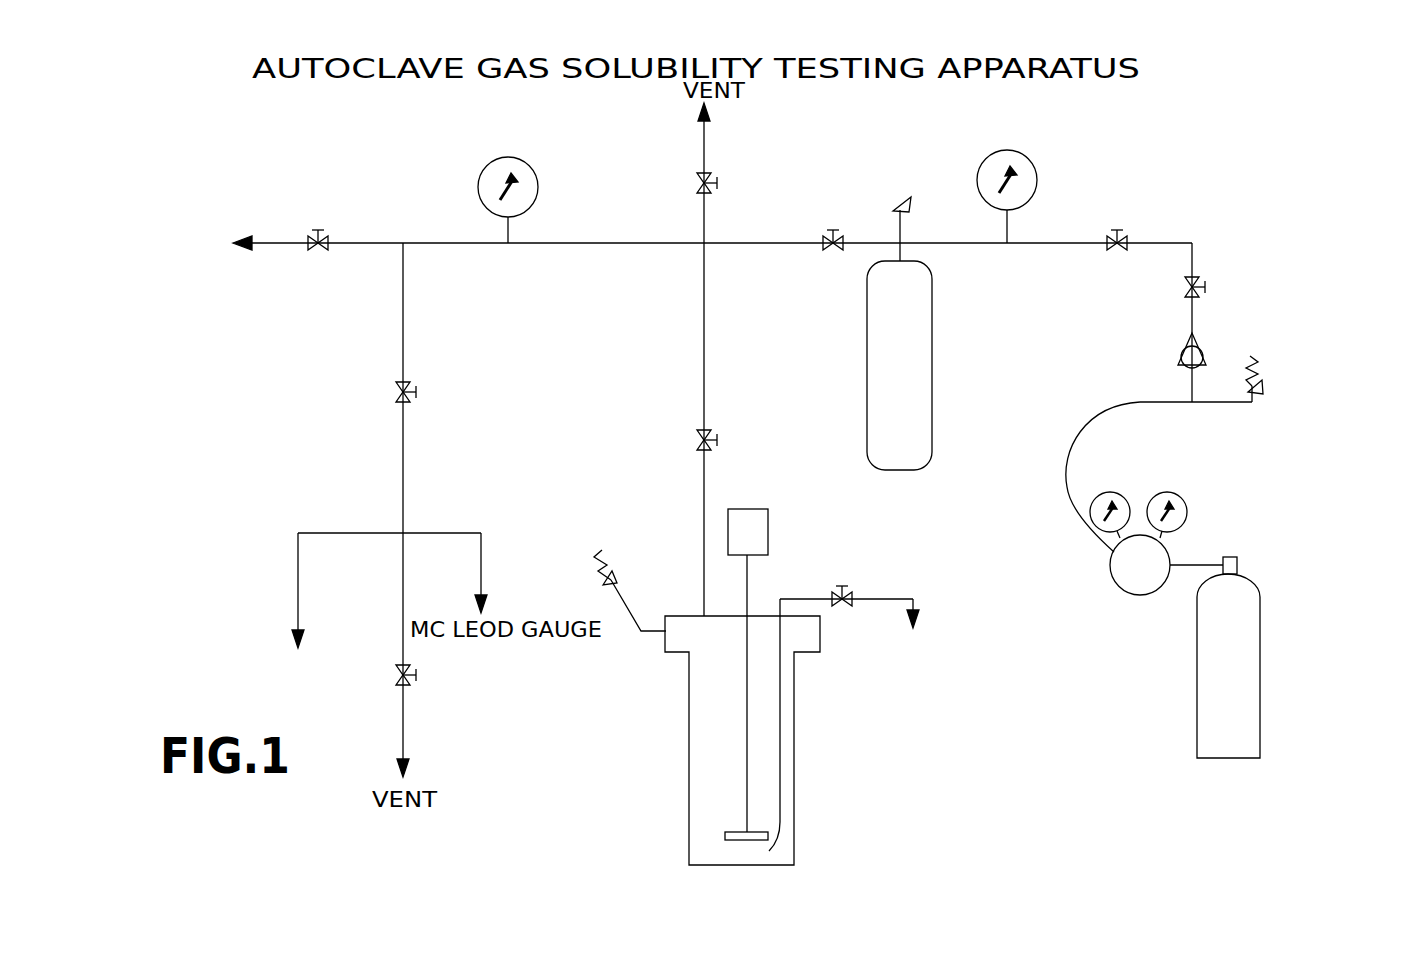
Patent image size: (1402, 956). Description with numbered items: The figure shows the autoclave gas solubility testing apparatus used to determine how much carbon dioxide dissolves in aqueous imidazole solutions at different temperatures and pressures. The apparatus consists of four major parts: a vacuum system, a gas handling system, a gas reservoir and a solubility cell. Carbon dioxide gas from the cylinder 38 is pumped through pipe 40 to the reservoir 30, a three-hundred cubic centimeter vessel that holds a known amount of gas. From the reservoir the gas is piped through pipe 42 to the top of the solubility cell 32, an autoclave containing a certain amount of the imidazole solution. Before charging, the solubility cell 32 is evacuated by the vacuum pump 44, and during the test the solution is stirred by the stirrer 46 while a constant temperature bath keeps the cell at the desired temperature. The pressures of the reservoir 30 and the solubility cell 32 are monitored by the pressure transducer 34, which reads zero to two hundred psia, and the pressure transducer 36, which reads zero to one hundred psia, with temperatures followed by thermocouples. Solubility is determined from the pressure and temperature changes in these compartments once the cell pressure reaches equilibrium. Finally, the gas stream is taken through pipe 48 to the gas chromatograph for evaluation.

The reservoir 30 is at (993, 321).
The solubility cell 32 is at (797, 697).
The pressure transducer 34 is at (1057, 180).
The pressure transducer 36 is at (543, 179).
The cylinder 38 is at (1260, 713).
The pipe 40 is at (1160, 243).
The pipe 42 is at (750, 243).
The vacuum pump 44 is at (298, 622).
The stirrer 46 is at (757, 509).
The pipe 48 is at (355, 243).